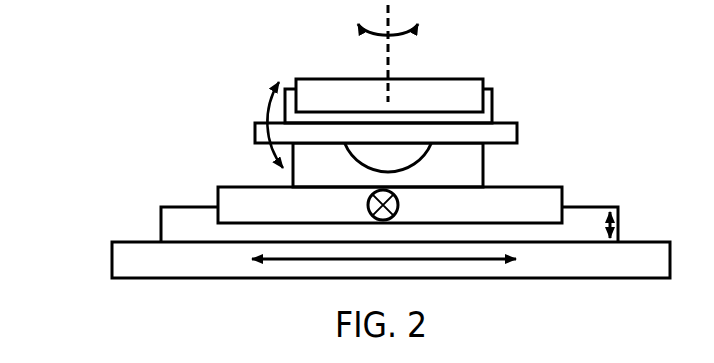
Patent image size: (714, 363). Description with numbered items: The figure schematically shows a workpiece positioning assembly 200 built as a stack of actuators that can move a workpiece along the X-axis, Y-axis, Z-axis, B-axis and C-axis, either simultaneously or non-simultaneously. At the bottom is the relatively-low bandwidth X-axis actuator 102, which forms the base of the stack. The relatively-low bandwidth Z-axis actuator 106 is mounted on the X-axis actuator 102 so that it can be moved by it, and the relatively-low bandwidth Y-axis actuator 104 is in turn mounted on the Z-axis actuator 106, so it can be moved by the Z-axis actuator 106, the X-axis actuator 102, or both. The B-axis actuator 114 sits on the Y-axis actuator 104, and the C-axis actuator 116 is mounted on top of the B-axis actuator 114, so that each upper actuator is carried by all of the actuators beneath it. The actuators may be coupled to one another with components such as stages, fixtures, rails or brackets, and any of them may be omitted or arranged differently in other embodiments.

The workpiece positioning assembly 200 is at (145, 57).
The relatively-low bandwidth X-axis actuator 102 is at (112, 267).
The relatively-low bandwidth Y-axis actuator 104 is at (217, 210).
The relatively-low bandwidth Z-axis actuator 106 is at (161, 239).
The B-axis actuator 114 is at (522, 122).
The C-axis actuator 116 is at (502, 55).